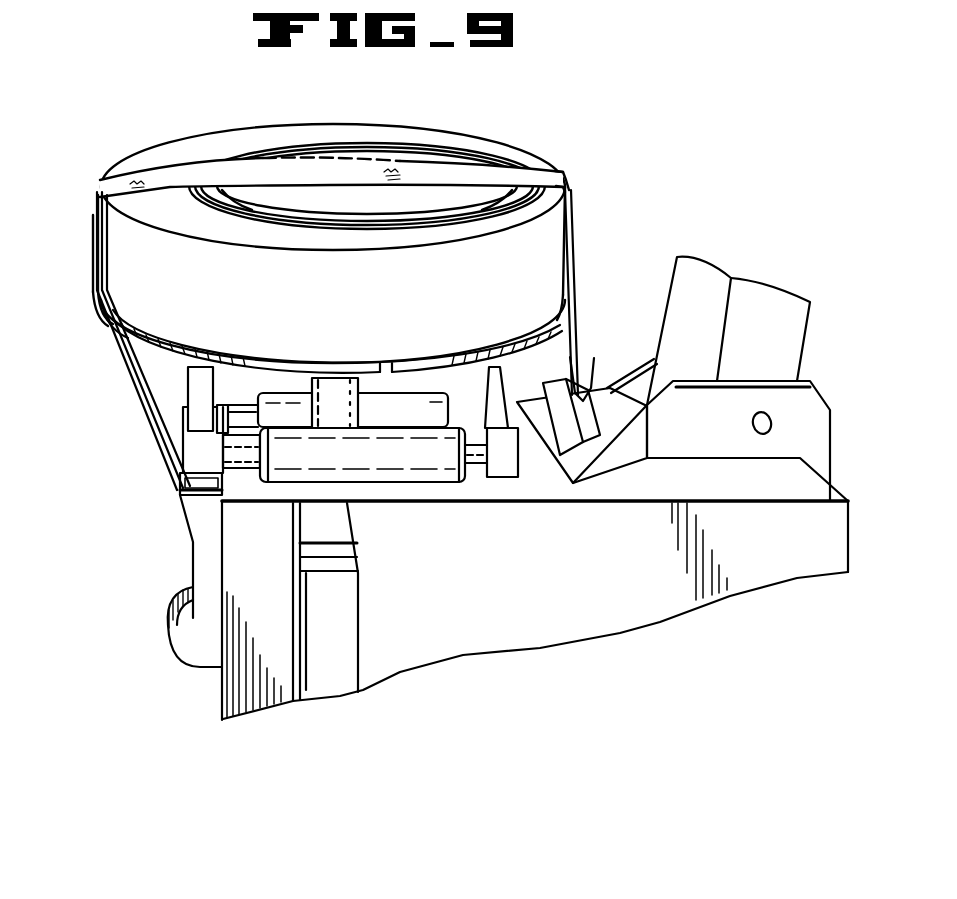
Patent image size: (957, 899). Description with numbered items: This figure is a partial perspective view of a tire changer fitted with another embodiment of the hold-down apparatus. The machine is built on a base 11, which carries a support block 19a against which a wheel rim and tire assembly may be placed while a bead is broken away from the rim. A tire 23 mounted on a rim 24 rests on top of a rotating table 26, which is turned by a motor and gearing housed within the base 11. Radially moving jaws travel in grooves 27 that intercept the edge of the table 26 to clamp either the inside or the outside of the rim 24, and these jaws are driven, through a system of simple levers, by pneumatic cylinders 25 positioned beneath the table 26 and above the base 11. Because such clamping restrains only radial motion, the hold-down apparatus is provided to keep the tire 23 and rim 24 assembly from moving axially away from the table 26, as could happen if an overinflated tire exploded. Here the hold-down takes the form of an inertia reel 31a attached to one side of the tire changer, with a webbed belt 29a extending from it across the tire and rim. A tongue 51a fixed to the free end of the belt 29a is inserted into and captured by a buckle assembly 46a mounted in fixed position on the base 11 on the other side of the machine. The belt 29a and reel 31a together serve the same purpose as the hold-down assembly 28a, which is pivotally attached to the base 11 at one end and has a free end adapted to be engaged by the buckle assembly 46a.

The base 11 is at (797, 578).
The support block 19a is at (330, 693).
The tire 23 is at (362, 319).
The rim 24 is at (342, 145).
The pneumatic cylinders 25 is at (393, 486).
The rotating table 26 is at (120, 338).
The grooves 27 is at (387, 364).
The hold-down assembly 28a is at (580, 181).
The webbed belt 29a is at (578, 262).
The inertia reel assembly 31a is at (198, 553).
The buckle assembly 46a is at (582, 424).
The tongue 51a is at (587, 385).